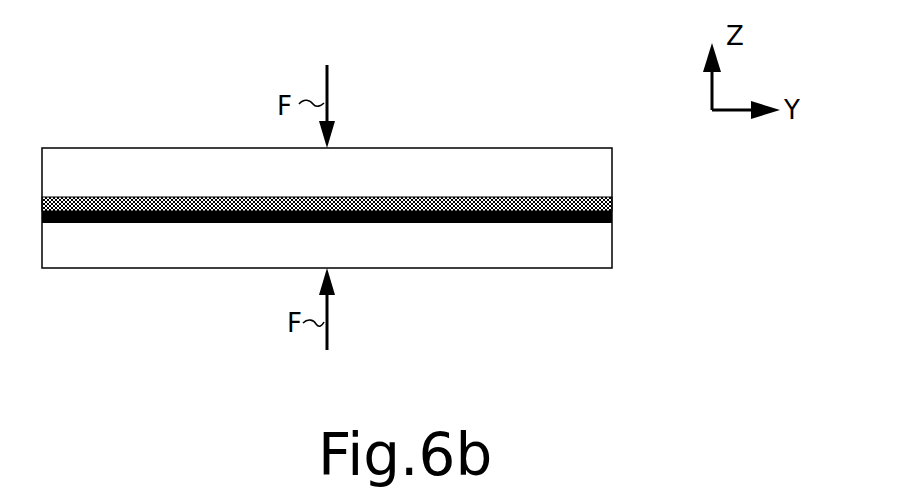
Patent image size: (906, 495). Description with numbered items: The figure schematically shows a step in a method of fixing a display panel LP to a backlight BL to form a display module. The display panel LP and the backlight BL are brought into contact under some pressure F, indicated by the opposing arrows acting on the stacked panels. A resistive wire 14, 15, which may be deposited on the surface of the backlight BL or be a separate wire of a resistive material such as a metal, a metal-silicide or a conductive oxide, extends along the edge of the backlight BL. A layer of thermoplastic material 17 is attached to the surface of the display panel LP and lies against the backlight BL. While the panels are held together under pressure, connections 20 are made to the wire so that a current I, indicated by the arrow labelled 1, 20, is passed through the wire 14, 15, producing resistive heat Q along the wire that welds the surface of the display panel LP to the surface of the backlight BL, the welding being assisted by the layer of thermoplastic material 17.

The multilayer composite/laminate 1 is at (389, 208).
The connections 20 is at (327, 208).
The layer of thermoplastic material 17 is at (613, 205).
The resistive wire 14 is at (373, 237).
The resistive wire 15 is at (327, 217).